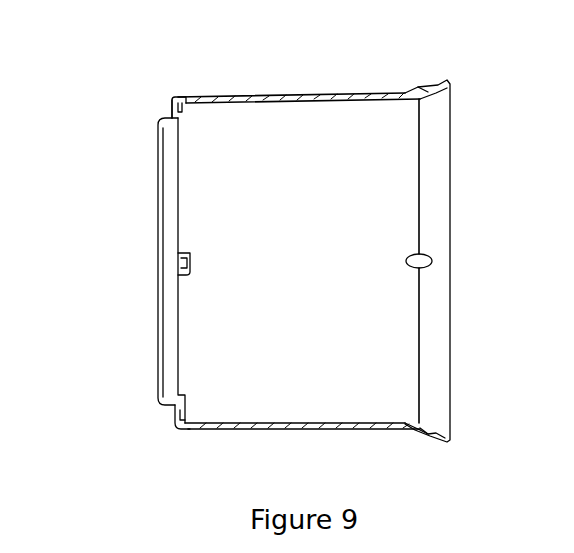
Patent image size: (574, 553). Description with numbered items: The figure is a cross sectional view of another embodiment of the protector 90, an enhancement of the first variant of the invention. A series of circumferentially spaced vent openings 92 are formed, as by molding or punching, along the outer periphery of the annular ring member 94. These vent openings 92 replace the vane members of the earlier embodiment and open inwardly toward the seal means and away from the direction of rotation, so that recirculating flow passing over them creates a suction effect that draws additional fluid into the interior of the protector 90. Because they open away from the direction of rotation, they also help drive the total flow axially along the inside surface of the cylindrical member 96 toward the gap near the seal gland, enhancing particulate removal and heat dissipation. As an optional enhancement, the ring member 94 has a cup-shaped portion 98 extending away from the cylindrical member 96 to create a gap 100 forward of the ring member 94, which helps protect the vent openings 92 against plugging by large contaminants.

The protector 90 is at (288, 88).
The vent openings 92 is at (192, 262).
The annular ring member 94 is at (173, 110).
The cylindrical member 96 is at (340, 430).
The cup-shaped portion 98 is at (158, 145).
The gap 100 is at (173, 343).